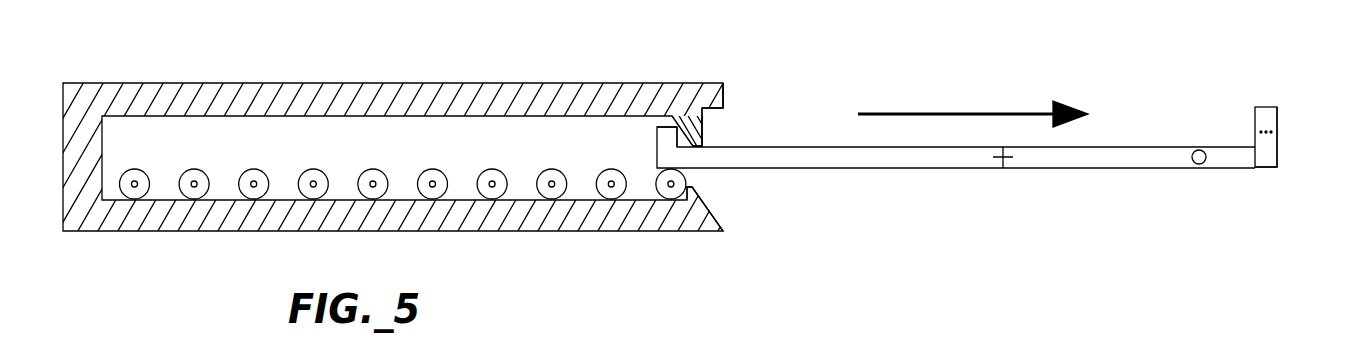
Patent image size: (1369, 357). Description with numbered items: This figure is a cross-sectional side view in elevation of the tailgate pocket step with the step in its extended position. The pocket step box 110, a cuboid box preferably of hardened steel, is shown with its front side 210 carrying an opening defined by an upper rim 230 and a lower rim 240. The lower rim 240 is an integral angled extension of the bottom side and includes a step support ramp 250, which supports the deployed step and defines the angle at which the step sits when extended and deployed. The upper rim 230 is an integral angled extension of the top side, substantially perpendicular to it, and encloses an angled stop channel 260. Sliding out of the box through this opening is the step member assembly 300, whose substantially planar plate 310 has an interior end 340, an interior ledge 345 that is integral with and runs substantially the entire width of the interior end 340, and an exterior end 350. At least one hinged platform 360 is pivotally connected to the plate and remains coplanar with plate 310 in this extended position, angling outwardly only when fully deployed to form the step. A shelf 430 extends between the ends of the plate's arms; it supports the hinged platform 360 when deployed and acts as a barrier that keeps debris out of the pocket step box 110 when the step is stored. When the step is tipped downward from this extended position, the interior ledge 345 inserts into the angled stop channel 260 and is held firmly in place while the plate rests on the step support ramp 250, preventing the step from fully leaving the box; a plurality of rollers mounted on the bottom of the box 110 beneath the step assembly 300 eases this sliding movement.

The pocket step box 110 is at (345, 103).
The front side 210 is at (723, 103).
The upper rim 230 is at (703, 137).
The lower rim 240 is at (718, 222).
The step support ramp 250 is at (714, 205).
The angled stop channel 260 is at (687, 97).
The step member assembly 300 is at (826, 62).
The planar plate 310 is at (843, 168).
The interior end 340 is at (648, 136).
The interior ledge 345 is at (668, 127).
The exterior end 350 is at (1278, 158).
The hinged platform 360 is at (1164, 131).
The shelf 430 is at (1266, 107).